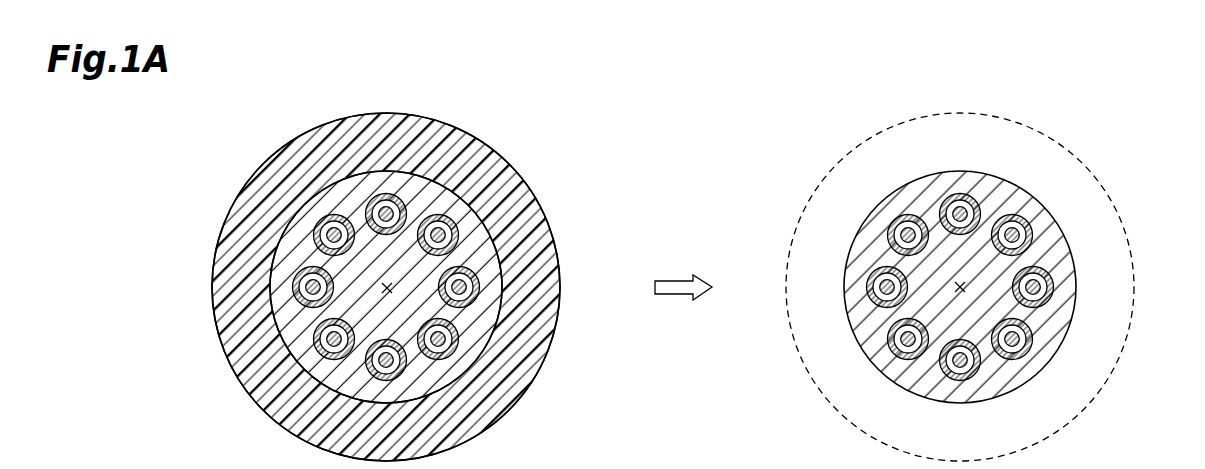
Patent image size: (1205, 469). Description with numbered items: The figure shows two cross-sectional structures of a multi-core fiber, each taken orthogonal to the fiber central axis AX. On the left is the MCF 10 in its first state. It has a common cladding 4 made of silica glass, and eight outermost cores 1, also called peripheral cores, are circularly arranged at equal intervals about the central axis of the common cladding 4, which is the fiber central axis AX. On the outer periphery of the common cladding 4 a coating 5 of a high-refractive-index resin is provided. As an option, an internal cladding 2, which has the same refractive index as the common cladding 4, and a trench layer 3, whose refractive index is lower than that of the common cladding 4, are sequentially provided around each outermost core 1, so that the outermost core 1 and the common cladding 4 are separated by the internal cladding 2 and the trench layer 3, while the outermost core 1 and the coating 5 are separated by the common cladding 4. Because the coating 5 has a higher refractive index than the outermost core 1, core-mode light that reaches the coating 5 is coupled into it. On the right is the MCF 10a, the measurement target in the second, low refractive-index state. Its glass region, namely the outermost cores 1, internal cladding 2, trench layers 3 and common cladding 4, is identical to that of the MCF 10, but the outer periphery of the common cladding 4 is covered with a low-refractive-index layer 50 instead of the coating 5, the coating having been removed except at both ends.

The outermost core 1 is at (398, 196).
The internal cladding 2 is at (441, 215).
The trench layer 3 is at (450, 228).
The common cladding 4 is at (444, 238).
The coating 5 is at (527, 280).
The MCF 10 is at (560, 96).
The MCF 10a is at (1140, 124).
The low-refractive-index layer 50 is at (1097, 363).
The fiber central axis AX is at (386, 289).